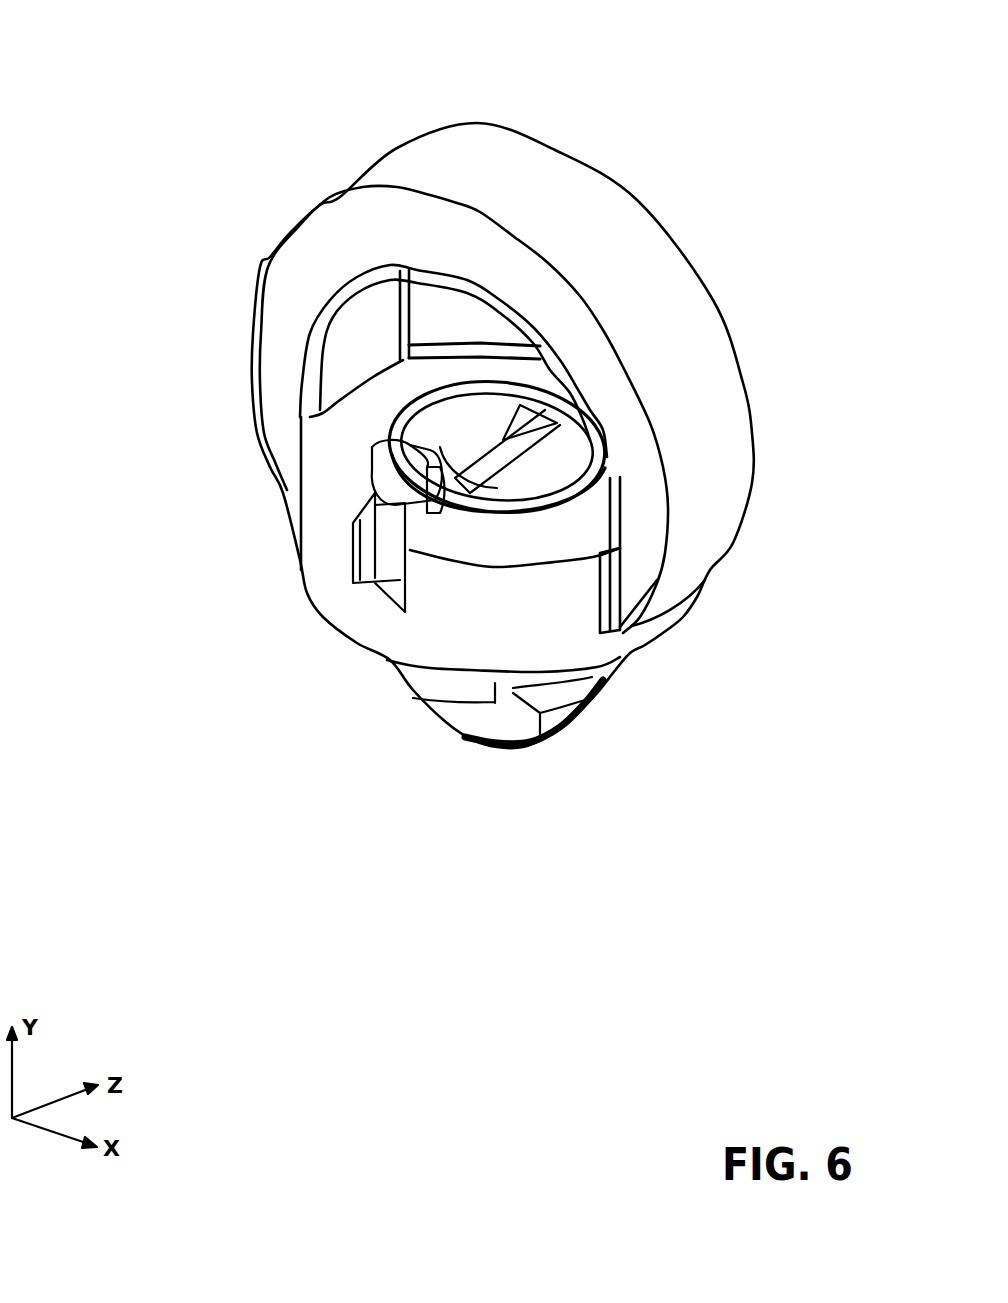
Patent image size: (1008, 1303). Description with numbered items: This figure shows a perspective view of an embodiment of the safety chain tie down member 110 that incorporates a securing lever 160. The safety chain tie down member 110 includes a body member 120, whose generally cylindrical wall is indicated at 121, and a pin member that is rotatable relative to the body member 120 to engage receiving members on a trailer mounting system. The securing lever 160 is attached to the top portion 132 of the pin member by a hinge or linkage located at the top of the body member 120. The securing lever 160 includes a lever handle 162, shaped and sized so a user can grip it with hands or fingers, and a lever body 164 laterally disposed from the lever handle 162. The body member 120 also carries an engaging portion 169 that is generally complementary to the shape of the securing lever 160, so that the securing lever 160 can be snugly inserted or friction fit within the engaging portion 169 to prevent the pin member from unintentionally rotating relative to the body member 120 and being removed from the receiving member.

The safety chain tie down member 110 is at (140, 60).
The body member 120 is at (172, 772).
The housing body 121 is at (483, 537).
The top portion 132 is at (568, 453).
The securing lever 160 is at (330, 450).
The lever handle 162 is at (387, 472).
The lever body 164 is at (477, 453).
The engaging portion 169 is at (380, 578).